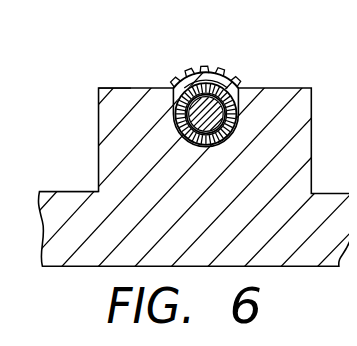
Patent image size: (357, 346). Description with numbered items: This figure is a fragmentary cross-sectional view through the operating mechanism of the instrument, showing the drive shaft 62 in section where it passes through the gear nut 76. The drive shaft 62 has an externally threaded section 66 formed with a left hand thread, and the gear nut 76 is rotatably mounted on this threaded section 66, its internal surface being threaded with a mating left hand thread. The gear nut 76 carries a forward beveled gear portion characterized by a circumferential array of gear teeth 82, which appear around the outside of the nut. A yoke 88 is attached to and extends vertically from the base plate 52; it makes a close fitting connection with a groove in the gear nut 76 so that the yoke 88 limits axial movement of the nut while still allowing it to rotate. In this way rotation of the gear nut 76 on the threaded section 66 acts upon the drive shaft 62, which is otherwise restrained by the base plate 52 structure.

The base plate 52 is at (63, 190).
The drive shaft 62 is at (174, 118).
The externally threaded section 66 is at (253, 92).
The gear nut 76 is at (167, 149).
The gear teeth 82 is at (204, 62).
The yoke 88 is at (127, 85).